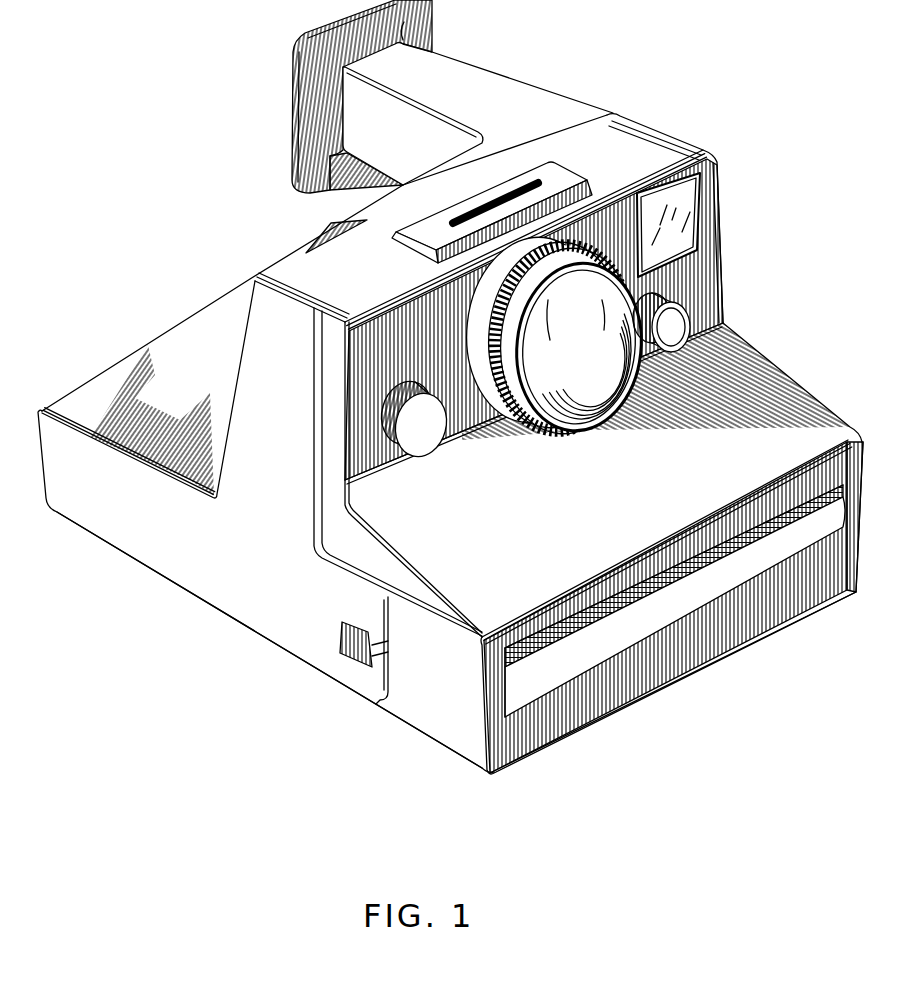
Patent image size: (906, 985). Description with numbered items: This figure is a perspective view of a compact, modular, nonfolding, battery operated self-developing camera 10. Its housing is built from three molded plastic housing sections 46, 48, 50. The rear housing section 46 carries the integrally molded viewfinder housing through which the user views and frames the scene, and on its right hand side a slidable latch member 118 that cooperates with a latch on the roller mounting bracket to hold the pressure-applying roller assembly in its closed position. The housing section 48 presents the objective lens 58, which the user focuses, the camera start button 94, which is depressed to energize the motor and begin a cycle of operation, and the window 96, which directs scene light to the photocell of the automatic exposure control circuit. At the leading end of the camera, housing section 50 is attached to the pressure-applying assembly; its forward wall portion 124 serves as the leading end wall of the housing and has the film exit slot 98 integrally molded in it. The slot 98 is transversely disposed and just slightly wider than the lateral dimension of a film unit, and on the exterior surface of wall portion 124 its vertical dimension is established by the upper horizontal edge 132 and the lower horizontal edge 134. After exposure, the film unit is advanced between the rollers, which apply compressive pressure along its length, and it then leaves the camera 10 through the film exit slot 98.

The self-developing camera 10 is at (640, 110).
The housing section 46 is at (253, 607).
The housing section 48 is at (783, 434).
The housing section 50 is at (426, 736).
The objective lens 58 is at (557, 372).
The camera start button 94 is at (418, 433).
The window 96 is at (690, 322).
The film exit slot 98 is at (579, 662).
The slidable latch member 118 is at (348, 652).
The forward wall portion 124 is at (522, 752).
The upper horizontal edge 132 is at (593, 628).
The lower horizontal edge 134 is at (632, 643).